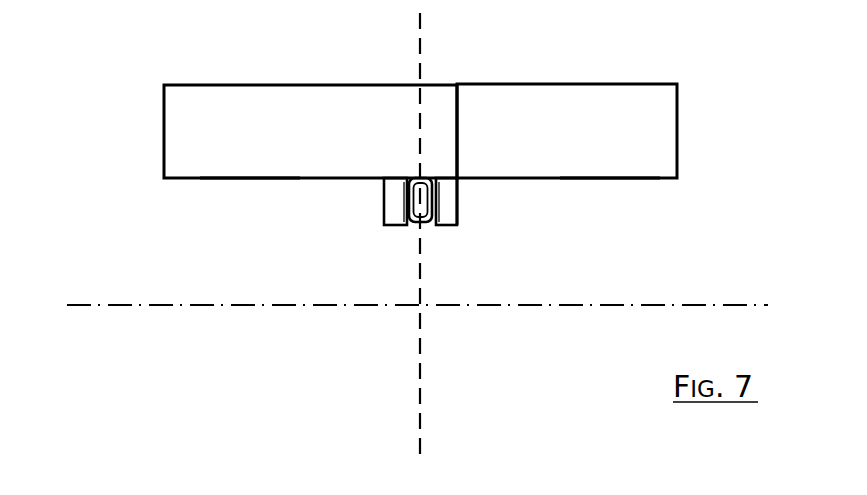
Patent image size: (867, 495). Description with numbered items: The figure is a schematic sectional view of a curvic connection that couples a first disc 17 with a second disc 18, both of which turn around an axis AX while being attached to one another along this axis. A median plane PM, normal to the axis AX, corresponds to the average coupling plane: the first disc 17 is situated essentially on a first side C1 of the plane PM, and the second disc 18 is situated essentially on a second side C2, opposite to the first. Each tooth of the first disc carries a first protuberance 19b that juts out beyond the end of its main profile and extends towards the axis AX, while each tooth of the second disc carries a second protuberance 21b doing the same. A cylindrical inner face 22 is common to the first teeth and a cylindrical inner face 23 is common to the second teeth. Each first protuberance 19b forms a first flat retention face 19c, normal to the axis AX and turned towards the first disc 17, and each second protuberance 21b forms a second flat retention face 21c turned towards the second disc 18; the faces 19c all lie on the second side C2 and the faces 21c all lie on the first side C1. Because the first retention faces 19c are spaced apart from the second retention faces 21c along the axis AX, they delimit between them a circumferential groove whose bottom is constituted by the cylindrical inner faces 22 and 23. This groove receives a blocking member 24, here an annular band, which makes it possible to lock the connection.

The first disc 17 is at (310, 131).
The second disc 18 is at (567, 154).
The cylindrical inner face 22 is at (238, 181).
The cylindrical inner face 23 is at (613, 181).
The second protuberance 21b is at (384, 223).
The second flat retention face 21c is at (402, 205).
The blocking member 24 is at (424, 190).
The first protuberance 19b is at (450, 215).
The first flat retention face 19c is at (445, 203).
The median plane PM is at (423, 27).
The axis AX is at (88, 310).
The first side C1 is at (368, 381).
The second side C2 is at (481, 381).